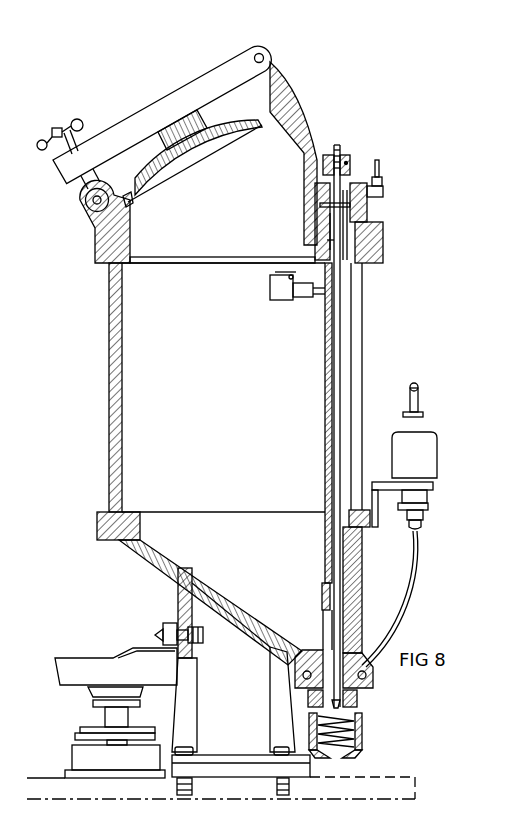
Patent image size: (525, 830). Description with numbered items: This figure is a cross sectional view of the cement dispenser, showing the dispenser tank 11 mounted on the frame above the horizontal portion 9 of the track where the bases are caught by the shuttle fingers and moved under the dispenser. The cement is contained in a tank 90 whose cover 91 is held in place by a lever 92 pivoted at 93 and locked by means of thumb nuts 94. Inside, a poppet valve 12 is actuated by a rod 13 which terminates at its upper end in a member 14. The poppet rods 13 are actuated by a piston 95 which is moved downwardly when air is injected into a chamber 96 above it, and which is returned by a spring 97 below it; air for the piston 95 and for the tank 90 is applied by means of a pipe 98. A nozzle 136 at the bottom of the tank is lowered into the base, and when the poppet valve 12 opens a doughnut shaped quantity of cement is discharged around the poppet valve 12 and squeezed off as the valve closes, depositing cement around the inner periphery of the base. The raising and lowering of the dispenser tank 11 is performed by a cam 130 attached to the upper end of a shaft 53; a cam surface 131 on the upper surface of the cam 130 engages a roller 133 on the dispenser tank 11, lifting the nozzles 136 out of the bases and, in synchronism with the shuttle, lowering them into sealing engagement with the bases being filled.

The horizontal portion 9 is at (364, 735).
The dispenser tank 11 is at (110, 407).
The poppet valve 12 is at (353, 729).
The rod 13 is at (337, 277).
The member 14 is at (338, 147).
The shaft 53 is at (103, 715).
The tank 90 is at (123, 358).
The cover 91 is at (213, 140).
The lever 92 is at (140, 110).
The pivot 93 is at (267, 53).
The thumb nut 94 is at (72, 118).
The piston 95 is at (365, 210).
The chamber 96 is at (382, 180).
The spring 97 is at (315, 218).
The pipe 98 is at (378, 163).
The cam 130 is at (167, 667).
The cam surface 131 is at (130, 647).
The roller 133 is at (167, 625).
The nozzle 136 is at (359, 702).